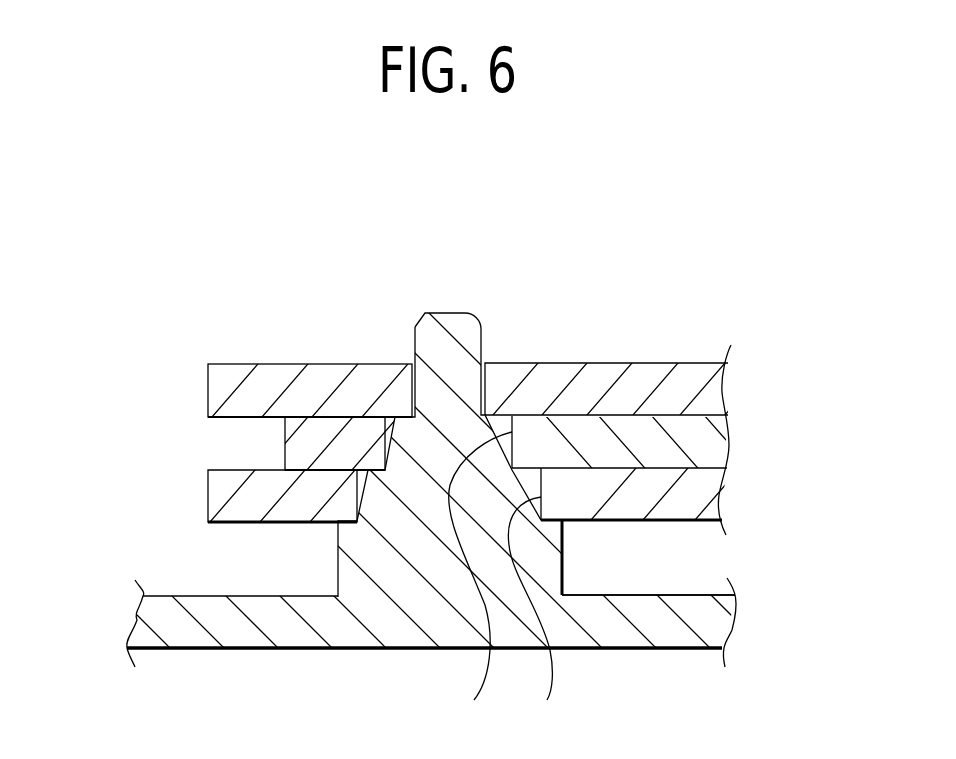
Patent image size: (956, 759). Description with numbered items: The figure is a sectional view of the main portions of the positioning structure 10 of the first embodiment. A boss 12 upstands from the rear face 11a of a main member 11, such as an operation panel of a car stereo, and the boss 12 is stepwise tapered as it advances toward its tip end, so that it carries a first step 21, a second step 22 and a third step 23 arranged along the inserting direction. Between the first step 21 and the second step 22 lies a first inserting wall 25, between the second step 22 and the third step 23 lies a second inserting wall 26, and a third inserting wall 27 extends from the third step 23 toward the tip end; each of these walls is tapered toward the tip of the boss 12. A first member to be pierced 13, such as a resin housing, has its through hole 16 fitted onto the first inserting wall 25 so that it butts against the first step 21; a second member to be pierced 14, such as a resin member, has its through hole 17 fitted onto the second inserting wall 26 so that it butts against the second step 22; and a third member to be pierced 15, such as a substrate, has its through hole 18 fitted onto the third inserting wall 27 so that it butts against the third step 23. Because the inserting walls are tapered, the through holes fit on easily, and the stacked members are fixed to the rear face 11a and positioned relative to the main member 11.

The positioning structure 10 is at (660, 256).
The main member 11 is at (239, 631).
The rear face 11a is at (651, 598).
The boss 12 is at (471, 238).
The first member to be pierced 13 is at (216, 497).
The second member to be pierced 14 is at (293, 448).
The third member to be pierced 15 is at (216, 391).
The through hole 16 is at (530, 619).
The through hole 17 is at (479, 586).
The through hole 18 is at (477, 364).
The first step 21 is at (550, 518).
The second step 22 is at (538, 512).
The third step 23 is at (499, 411).
The first inserting wall 25 is at (361, 477).
The second inserting wall 26 is at (385, 430).
The third inserting wall 27 is at (409, 376).